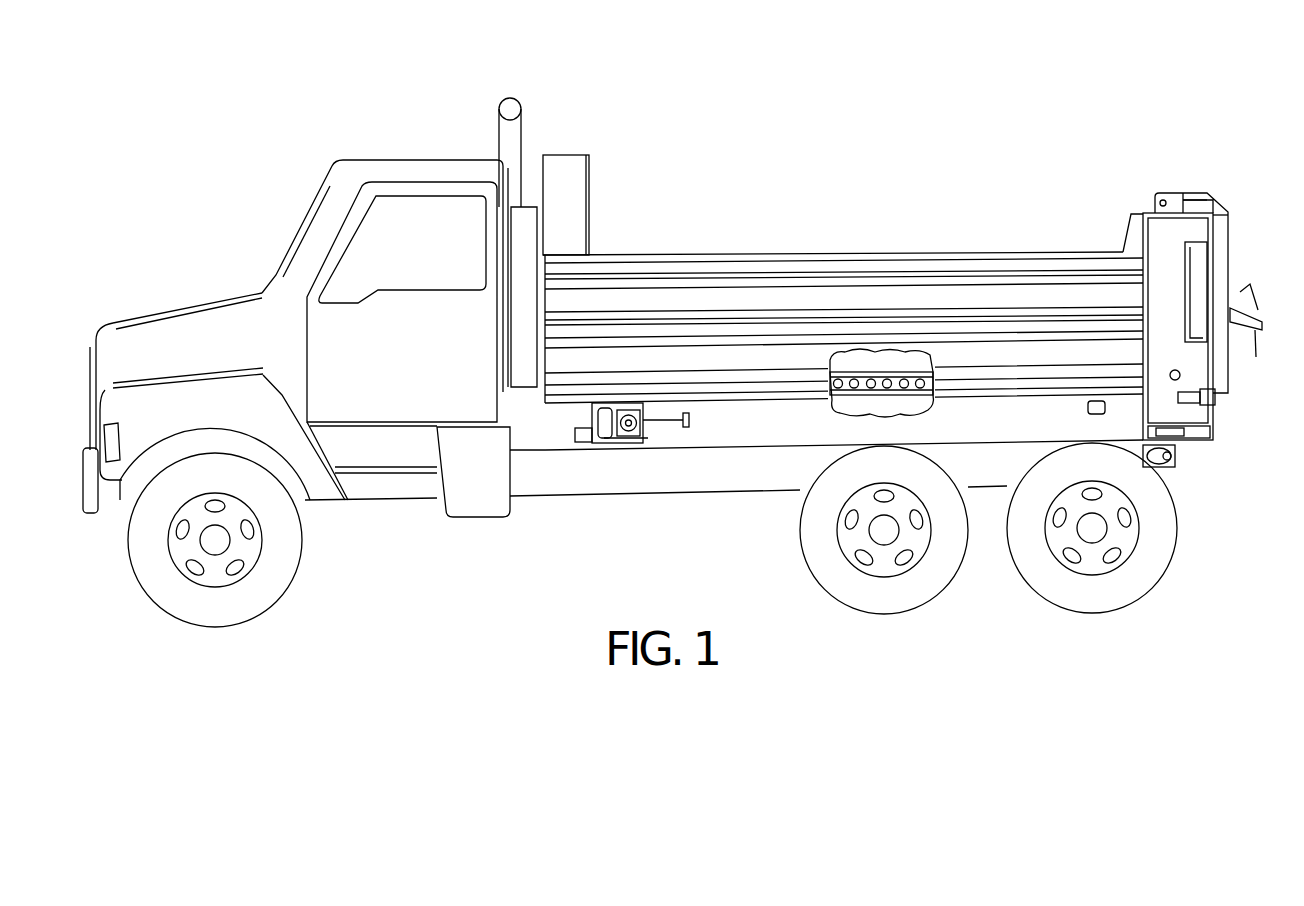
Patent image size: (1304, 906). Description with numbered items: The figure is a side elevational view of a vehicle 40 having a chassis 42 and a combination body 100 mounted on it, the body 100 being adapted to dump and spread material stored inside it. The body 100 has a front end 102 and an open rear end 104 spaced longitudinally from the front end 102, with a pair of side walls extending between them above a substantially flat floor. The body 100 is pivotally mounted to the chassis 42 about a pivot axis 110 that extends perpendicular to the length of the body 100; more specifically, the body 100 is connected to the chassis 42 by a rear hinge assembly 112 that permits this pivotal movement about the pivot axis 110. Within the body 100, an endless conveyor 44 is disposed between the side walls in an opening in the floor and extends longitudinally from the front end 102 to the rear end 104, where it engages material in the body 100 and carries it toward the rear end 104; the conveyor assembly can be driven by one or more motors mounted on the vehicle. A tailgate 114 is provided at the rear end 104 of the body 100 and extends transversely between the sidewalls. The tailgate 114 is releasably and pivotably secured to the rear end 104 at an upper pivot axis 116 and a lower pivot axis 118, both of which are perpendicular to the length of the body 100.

The vehicle 40 is at (365, 165).
The chassis 42 is at (585, 497).
The endless conveyor 44 is at (855, 393).
The combination body 100 is at (660, 253).
The front end 102 is at (553, 250).
The open rear end 104 is at (1225, 210).
The pivot axis 110 is at (1168, 465).
The rear hinge assembly 112 is at (1170, 457).
The tailgate 114 is at (1190, 192).
The upper pivot axis 116 is at (1160, 200).
The lower pivot axis 118 is at (1222, 395).